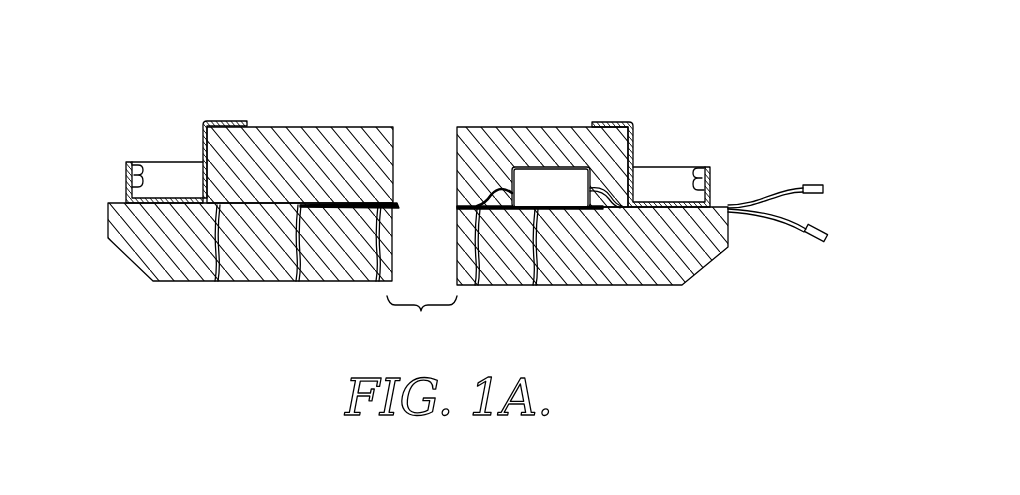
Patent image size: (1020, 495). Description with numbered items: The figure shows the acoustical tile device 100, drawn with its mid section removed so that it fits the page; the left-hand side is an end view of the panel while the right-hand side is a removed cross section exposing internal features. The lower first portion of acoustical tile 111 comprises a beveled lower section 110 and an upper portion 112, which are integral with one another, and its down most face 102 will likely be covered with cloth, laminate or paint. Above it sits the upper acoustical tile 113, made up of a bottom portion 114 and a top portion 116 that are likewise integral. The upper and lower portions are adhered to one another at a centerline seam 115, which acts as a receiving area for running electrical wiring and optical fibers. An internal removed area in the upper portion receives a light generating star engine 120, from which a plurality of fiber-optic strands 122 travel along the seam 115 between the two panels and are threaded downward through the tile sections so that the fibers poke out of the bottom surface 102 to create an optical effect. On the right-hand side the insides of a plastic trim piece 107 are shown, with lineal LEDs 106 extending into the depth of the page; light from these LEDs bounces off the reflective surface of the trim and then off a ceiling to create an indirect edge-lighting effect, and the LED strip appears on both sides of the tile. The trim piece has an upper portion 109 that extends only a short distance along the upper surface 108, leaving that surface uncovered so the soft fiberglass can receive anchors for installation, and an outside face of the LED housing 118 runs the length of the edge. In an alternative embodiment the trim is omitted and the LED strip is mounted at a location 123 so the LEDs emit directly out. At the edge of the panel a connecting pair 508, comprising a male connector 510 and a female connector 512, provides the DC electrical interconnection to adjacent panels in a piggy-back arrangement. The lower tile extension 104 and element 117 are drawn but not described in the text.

The acoustical tile device 100 is at (527, 58).
The down most face 102 is at (282, 282).
The substrate extension 104 is at (707, 268).
The lineal LEDs 106 is at (114, 168).
The plastic trim piece 107 is at (642, 130).
The upper surface 108 is at (528, 176).
The upper portion of plastic trim piece 109 is at (598, 122).
The beveled lower section 110 is at (103, 260).
The first portion of acoustical tile 111 is at (152, 270).
The upper portion 112 is at (112, 221).
The upper acoustical tile 113 is at (330, 160).
The bottom portion 114 is at (238, 172).
The centerline seam 115 is at (356, 196).
The top portion 116 is at (252, 122).
The die 117 is at (562, 167).
The LED housing 118 is at (712, 182).
The star engine 120 is at (477, 200).
The fiber-optic strands 122 is at (275, 188).
The location 123 is at (634, 173).
The connecting pair 508 is at (804, 250).
The male connector 510 is at (820, 240).
The female connector 512 is at (822, 185).